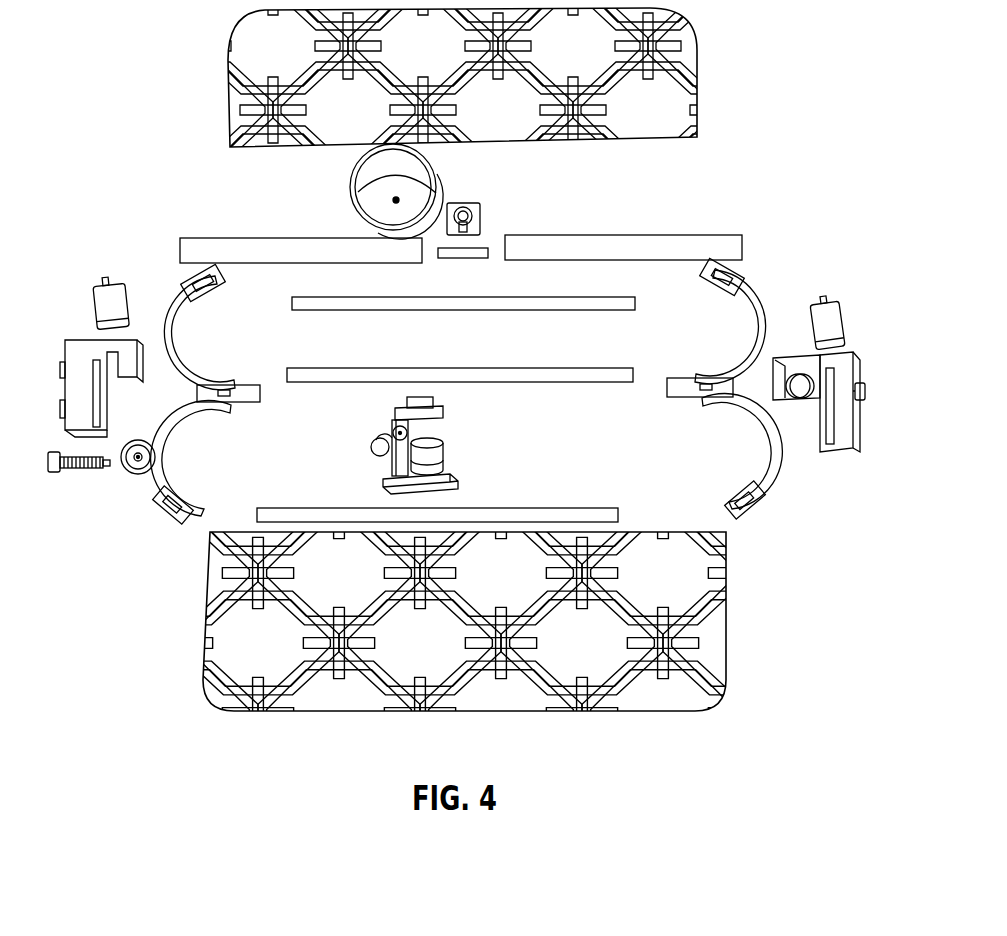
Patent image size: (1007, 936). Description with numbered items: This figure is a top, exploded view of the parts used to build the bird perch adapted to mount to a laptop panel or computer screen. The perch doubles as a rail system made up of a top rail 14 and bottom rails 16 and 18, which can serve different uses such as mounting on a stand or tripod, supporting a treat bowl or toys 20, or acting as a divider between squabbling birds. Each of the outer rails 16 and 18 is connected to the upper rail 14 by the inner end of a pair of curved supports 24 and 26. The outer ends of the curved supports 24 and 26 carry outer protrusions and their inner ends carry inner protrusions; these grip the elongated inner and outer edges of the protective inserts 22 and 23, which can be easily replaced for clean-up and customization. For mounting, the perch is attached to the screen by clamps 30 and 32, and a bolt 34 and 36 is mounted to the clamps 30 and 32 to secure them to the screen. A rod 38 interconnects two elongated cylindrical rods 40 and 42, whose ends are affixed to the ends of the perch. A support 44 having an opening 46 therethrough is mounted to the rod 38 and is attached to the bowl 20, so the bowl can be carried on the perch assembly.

The top rail 14 is at (383, 373).
The bottom rail 16 is at (530, 312).
The bottom rail 18 is at (473, 504).
The bowl 20 is at (390, 187).
The protective insert 22 is at (722, 595).
The protective insert 23 is at (693, 85).
The curved support 24 is at (181, 338).
The curved support 26 is at (748, 300).
The clamp 30 is at (842, 337).
The clamp 32 is at (72, 392).
The bolt 34 is at (860, 398).
The bolt 36 is at (137, 473).
The rod 38 is at (483, 252).
The elongated cylindrical rod 40 is at (197, 248).
The elongated cylindrical rod 42 is at (698, 238).
The support 44 is at (478, 208).
The opening 46 is at (463, 208).